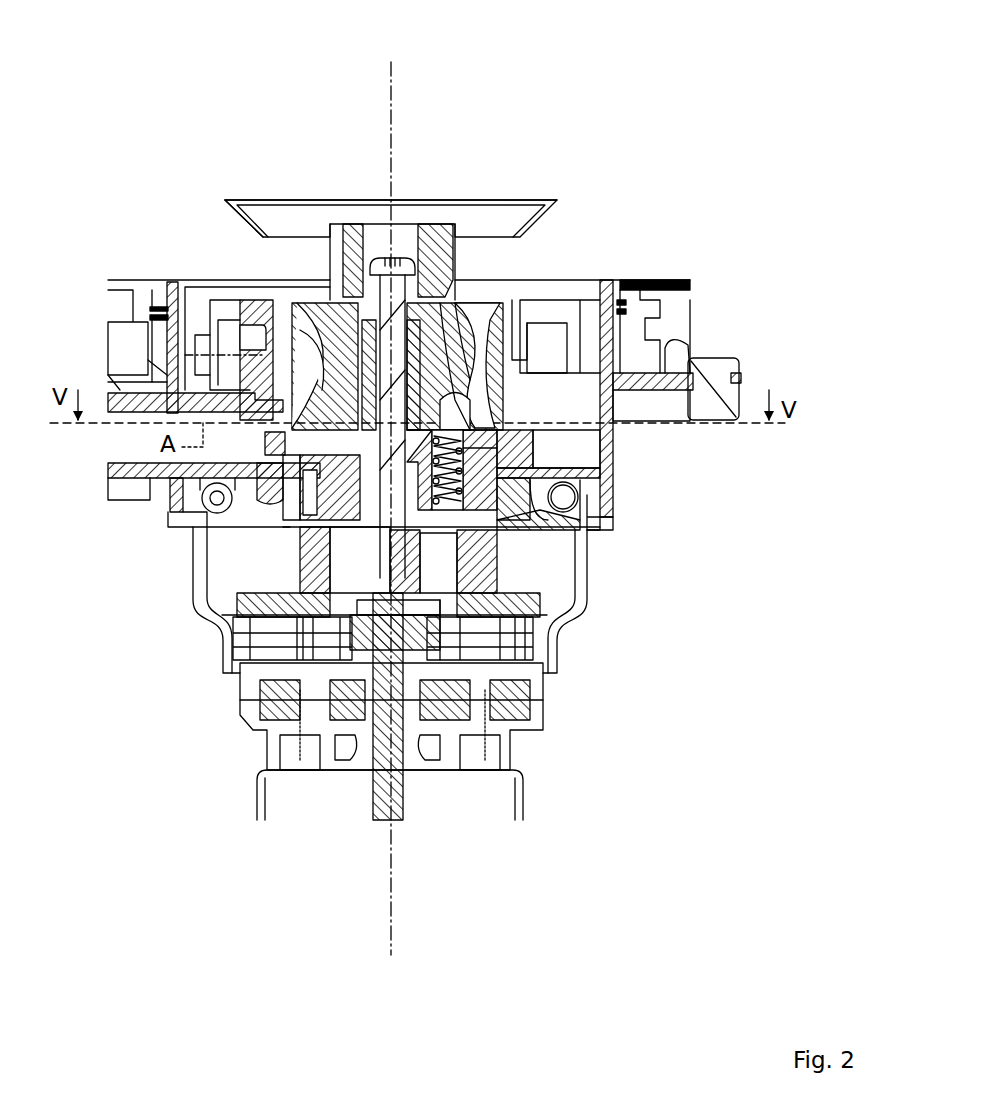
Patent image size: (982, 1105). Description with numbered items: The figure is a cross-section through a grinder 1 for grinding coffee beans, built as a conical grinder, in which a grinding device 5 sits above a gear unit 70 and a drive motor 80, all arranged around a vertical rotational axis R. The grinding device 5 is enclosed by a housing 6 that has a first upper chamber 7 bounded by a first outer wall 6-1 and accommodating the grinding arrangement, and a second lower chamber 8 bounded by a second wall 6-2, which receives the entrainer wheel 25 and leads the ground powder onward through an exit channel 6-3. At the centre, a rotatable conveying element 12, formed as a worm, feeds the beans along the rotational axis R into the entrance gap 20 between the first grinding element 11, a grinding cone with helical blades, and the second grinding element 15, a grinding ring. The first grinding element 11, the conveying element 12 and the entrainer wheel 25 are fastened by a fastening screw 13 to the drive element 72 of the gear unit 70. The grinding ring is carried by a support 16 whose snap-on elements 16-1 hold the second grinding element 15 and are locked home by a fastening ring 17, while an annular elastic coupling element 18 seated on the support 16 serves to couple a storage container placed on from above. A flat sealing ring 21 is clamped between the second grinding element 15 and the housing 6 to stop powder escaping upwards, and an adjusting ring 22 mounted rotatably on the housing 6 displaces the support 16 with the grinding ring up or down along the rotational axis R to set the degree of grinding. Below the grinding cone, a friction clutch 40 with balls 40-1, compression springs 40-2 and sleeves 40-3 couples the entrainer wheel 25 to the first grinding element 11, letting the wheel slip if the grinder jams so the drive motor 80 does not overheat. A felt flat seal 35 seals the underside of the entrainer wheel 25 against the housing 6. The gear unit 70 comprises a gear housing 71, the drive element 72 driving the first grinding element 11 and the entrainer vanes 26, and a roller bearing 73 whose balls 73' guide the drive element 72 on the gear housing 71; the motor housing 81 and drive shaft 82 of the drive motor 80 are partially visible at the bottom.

The grinder 1 is at (722, 80).
The grinding device 5 is at (713, 245).
The housing 6 is at (172, 278).
The first outer wall 6-1 is at (615, 320).
The second wall 6-2 is at (613, 408).
The exit channel 6-3 is at (128, 455).
The first upper chamber 7 is at (224, 320).
The second lower chamber 8 is at (325, 472).
The first grinding element 11 is at (452, 303).
The conveying element 12 is at (425, 240).
The fastening screw 13 is at (372, 262).
The second grinding element 15 is at (550, 345).
The support 16 is at (573, 265).
The snap-on elements 16-1 is at (535, 345).
The fastening ring 17 is at (565, 350).
The coupling element 18 is at (225, 200).
The entrance gap 20 is at (295, 303).
The sealing ring 21 is at (560, 400).
The adjusting ring 22 is at (160, 310).
The entrainer wheel 25 is at (555, 437).
The entrainer vanes 26 is at (270, 441).
The flat seal 35 is at (548, 520).
The friction clutch 40 is at (706, 508).
The balls 40-1 is at (540, 448).
The compression springs 40-2 is at (540, 476).
The sleeves 40-3 is at (540, 462).
The gear unit 70 is at (585, 628).
The gear housing 71 is at (193, 600).
The drive element 72 is at (572, 530).
The roller bearing 73 is at (612, 517).
The balls 73' is at (419, 527).
The drive motor 80 is at (542, 793).
The motor housing 81 is at (260, 800).
The drive shaft 82 is at (372, 805).
The rotational axis R is at (391, 62).